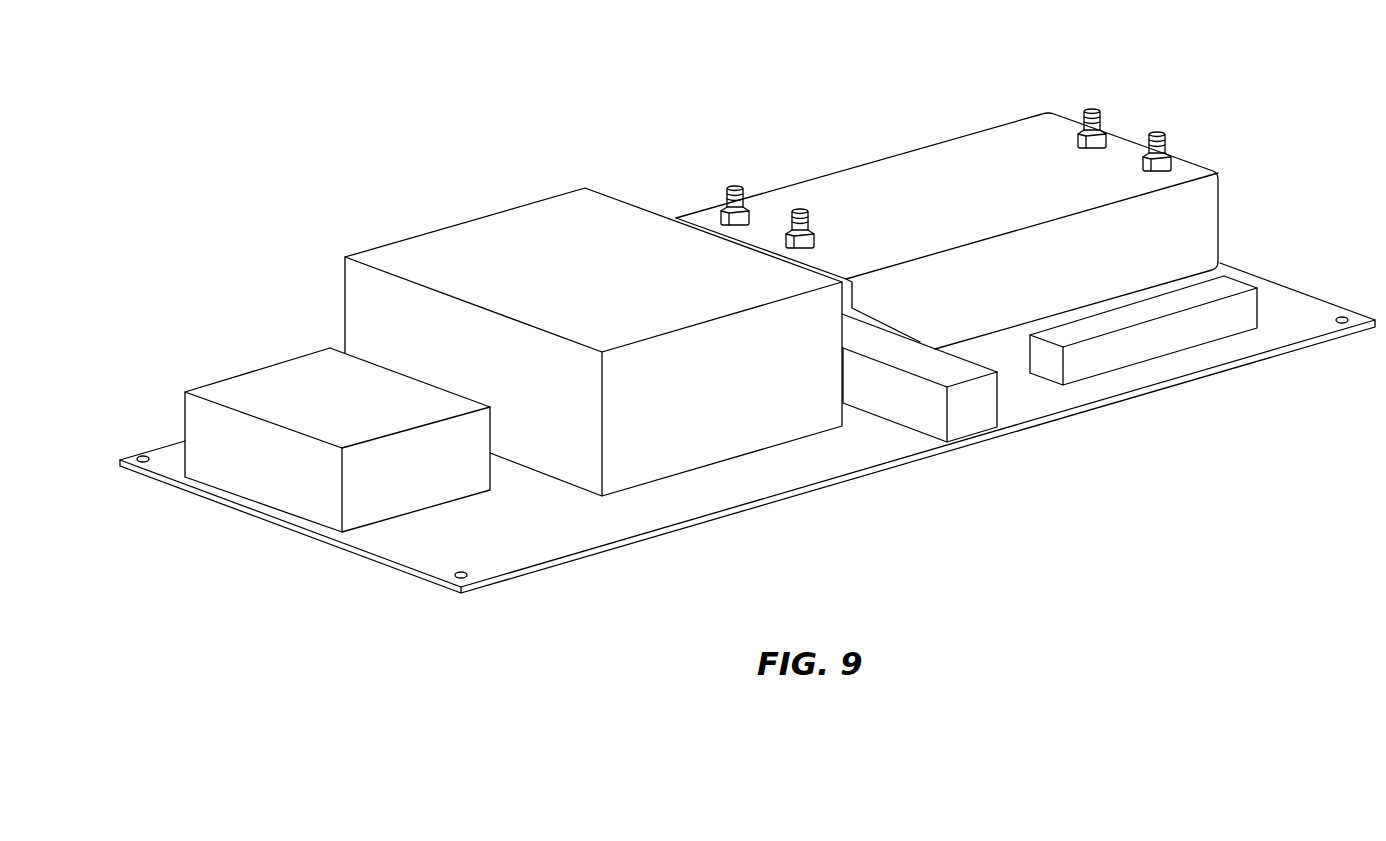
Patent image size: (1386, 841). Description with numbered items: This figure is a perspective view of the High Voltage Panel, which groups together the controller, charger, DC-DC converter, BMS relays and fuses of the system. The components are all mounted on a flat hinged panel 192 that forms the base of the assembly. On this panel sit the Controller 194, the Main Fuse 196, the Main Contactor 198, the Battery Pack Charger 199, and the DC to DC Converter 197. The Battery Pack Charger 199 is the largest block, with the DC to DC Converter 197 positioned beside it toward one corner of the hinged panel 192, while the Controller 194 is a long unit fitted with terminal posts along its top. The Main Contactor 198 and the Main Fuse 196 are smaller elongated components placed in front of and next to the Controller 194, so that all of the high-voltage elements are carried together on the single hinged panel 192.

The hinged panel 192 is at (168, 453).
The Controller 194 is at (897, 188).
The Main Fuse 196 is at (1202, 293).
The DC to DC Converter 197 is at (288, 380).
The Main Contactor 198 is at (972, 406).
The Battery Pack Charger 199 is at (503, 238).